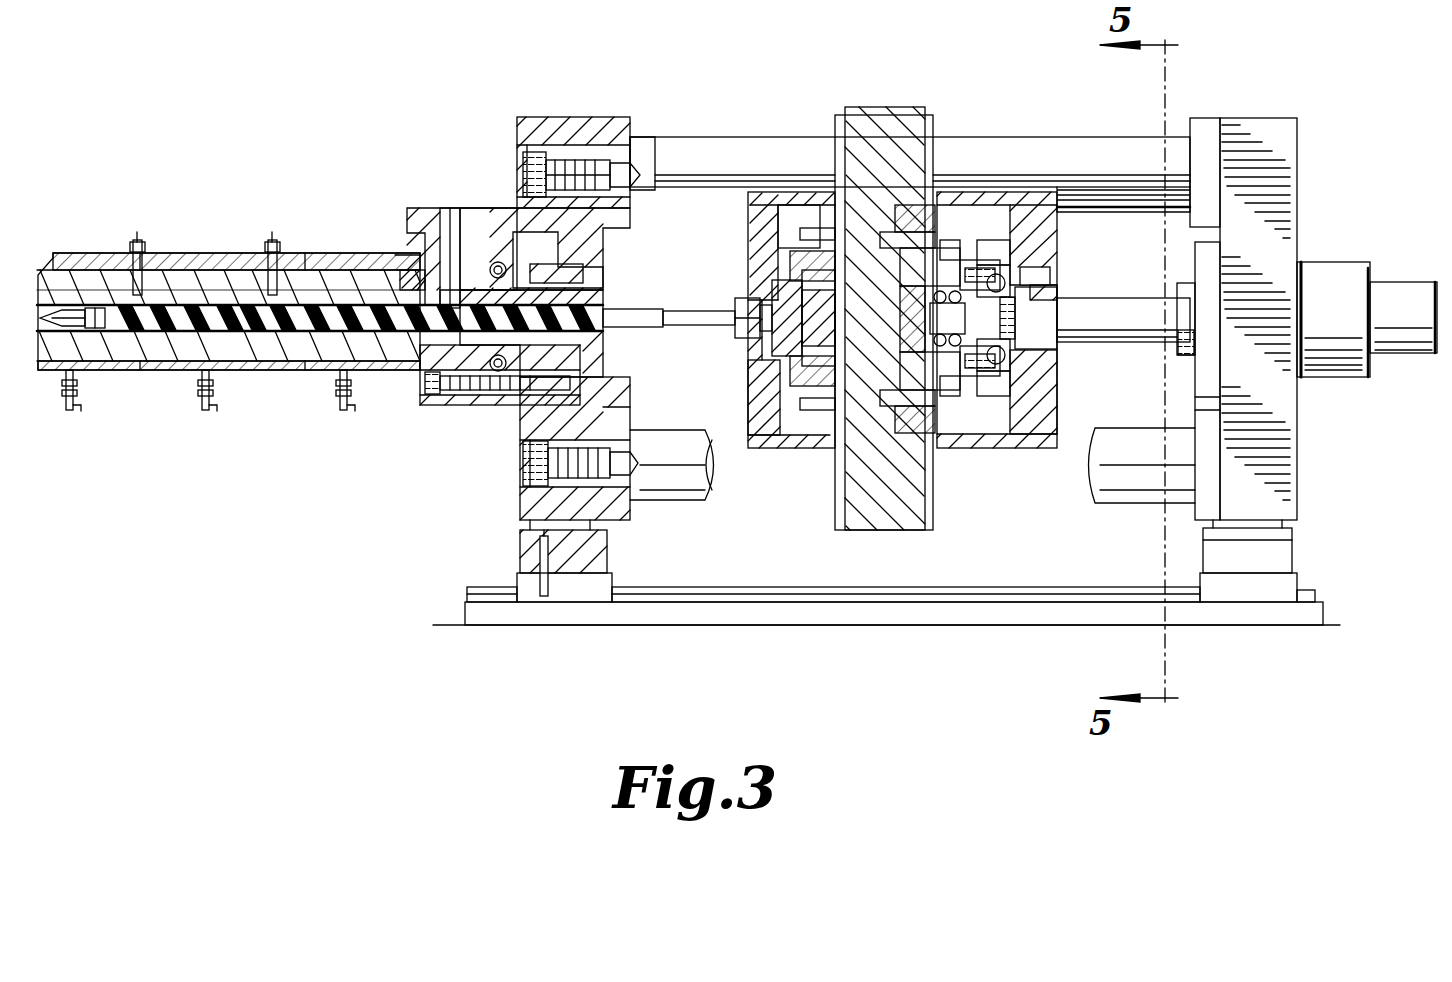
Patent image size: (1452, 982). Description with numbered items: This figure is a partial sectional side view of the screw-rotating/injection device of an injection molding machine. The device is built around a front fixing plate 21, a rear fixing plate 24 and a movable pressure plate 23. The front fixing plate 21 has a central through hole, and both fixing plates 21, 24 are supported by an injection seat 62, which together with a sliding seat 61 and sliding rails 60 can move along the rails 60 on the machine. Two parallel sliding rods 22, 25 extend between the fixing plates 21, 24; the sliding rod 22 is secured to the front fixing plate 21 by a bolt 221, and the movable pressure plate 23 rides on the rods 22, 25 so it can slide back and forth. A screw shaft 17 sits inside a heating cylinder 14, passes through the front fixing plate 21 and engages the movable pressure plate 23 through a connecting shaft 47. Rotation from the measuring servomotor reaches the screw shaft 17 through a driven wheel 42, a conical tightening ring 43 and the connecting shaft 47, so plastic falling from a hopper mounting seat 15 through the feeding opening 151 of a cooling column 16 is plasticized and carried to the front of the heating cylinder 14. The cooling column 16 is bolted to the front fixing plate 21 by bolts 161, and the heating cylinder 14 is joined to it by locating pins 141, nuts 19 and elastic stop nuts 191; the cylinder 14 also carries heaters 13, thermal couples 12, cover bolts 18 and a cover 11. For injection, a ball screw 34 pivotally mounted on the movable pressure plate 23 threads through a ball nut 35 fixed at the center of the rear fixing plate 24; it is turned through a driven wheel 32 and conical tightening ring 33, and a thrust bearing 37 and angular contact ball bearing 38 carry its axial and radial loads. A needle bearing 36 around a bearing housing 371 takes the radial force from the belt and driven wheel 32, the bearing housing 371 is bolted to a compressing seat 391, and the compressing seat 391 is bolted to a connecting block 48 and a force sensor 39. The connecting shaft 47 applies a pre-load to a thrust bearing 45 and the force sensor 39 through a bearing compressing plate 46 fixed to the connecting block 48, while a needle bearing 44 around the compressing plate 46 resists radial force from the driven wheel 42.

The cover 11 is at (95, 252).
The thermal couples 12 is at (70, 405).
The heaters 13 is at (185, 372).
The heating cylinder 14 is at (268, 372).
The locating pins 141 is at (400, 258).
The hopper mounting seat 15 is at (490, 240).
The feeding opening 151 is at (458, 218).
The cooling column 16 is at (425, 258).
The bolts 161 is at (420, 385).
The screw shaft 17 is at (155, 373).
The cover bolts 18 is at (137, 240).
The nuts 19 is at (425, 395).
The elastic stop nuts 191 is at (580, 360).
The front fixing plate 21 is at (540, 125).
The sliding rod 22 is at (690, 148).
The bolt 221 is at (595, 160).
The movable pressure plate 23 is at (866, 107).
The rear fixing plate 24 is at (1300, 470).
The sliding rod 25 is at (690, 498).
The driven wheel 32 is at (1035, 212).
The conical tightening ring 33 is at (1070, 252).
The ball screw 34 is at (1397, 282).
The ball nut 35 is at (1325, 262).
The needle bearing 36 is at (1000, 250).
The thrust bearing 37 is at (1058, 382).
The bearing housing 371 is at (960, 262).
The angular contact ball bearing 38 is at (972, 450).
The force sensor 39 is at (912, 530).
The compressing seat 391 is at (955, 452).
The driven wheel 42 is at (762, 195).
The conical tightening ring 43 is at (735, 332).
The needle bearing 44 is at (760, 372).
The thrust bearing 45 is at (890, 250).
The bearing compressing plate 46 is at (800, 253).
The connecting shaft 47 is at (740, 292).
The connecting block 48 is at (805, 450).
The sliding rails 60 is at (648, 604).
The sliding seat 61 is at (575, 602).
The injection seat 62 is at (520, 560).